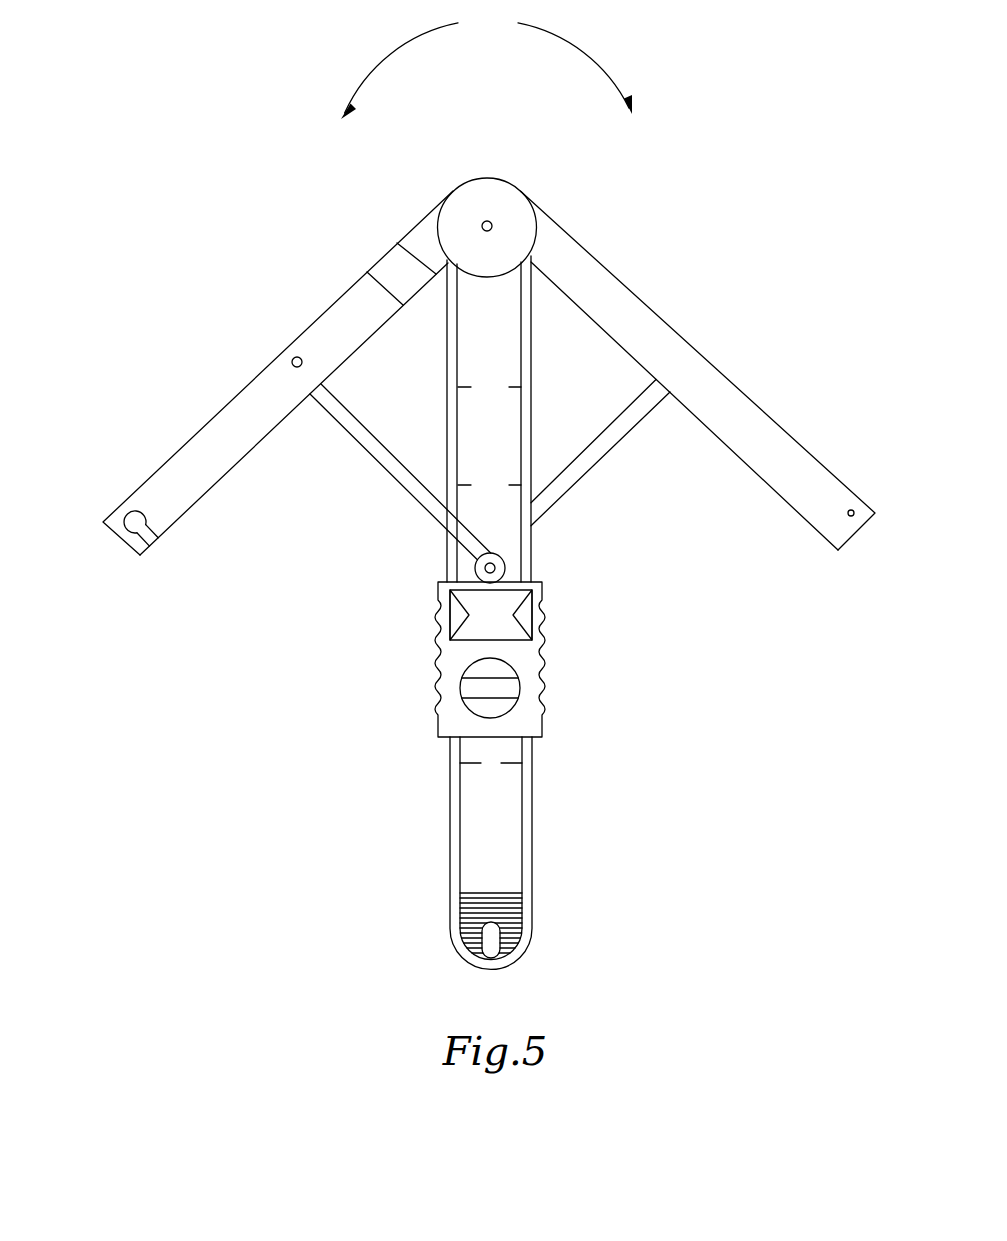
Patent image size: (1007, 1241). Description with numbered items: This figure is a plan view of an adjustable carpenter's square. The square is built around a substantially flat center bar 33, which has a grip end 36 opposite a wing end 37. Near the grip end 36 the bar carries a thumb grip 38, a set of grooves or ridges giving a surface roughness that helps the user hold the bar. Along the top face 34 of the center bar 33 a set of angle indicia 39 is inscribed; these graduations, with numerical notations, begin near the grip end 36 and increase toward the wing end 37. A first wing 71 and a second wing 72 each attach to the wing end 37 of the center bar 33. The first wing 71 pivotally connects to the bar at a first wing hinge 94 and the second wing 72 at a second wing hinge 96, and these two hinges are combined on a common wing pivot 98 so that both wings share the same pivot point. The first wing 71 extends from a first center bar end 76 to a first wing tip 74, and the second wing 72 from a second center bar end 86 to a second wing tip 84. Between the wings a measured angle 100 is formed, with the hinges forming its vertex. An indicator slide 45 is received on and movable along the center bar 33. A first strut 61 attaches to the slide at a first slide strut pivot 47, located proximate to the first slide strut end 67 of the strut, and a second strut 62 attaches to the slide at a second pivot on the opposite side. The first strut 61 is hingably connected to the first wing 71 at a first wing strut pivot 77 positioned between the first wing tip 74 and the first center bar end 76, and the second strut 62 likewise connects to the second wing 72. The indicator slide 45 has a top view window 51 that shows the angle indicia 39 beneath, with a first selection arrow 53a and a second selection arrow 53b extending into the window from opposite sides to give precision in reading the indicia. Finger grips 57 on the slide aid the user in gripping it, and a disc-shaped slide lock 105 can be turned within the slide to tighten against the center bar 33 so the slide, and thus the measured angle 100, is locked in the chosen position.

The measured angle 100 is at (486, 65).
The common wing pivot 98 is at (486, 208).
The second wing hinge 96 is at (483, 222).
The first wing hinge 94 is at (497, 224).
The first center bar end 76 is at (424, 238).
The second center bar end 86 is at (540, 236).
The second wing 72 is at (645, 327).
The first wing strut pivot 77 is at (297, 356).
The wing end 37 is at (510, 283).
The first wing 71 is at (228, 423).
The top face 34 is at (478, 436).
The center bar 33 is at (527, 433).
The first strut 61 is at (370, 443).
The second strut 62 is at (600, 447).
The first wing tip 74 is at (105, 516).
The second wing tip 84 is at (866, 508).
The first slide strut end 67 is at (492, 553).
The top view window 51 is at (448, 584).
The first slide strut pivot 47 is at (505, 570).
The first selection arrow 53a is at (455, 617).
The second selection arrow 53b is at (527, 617).
The finger grips 57 is at (440, 684).
The slide lock 105 is at (512, 689).
The indicator slide 45 is at (527, 725).
The angle indicia 39 is at (473, 764).
The thumb grip 38 is at (508, 915).
The grip end 36 is at (462, 950).